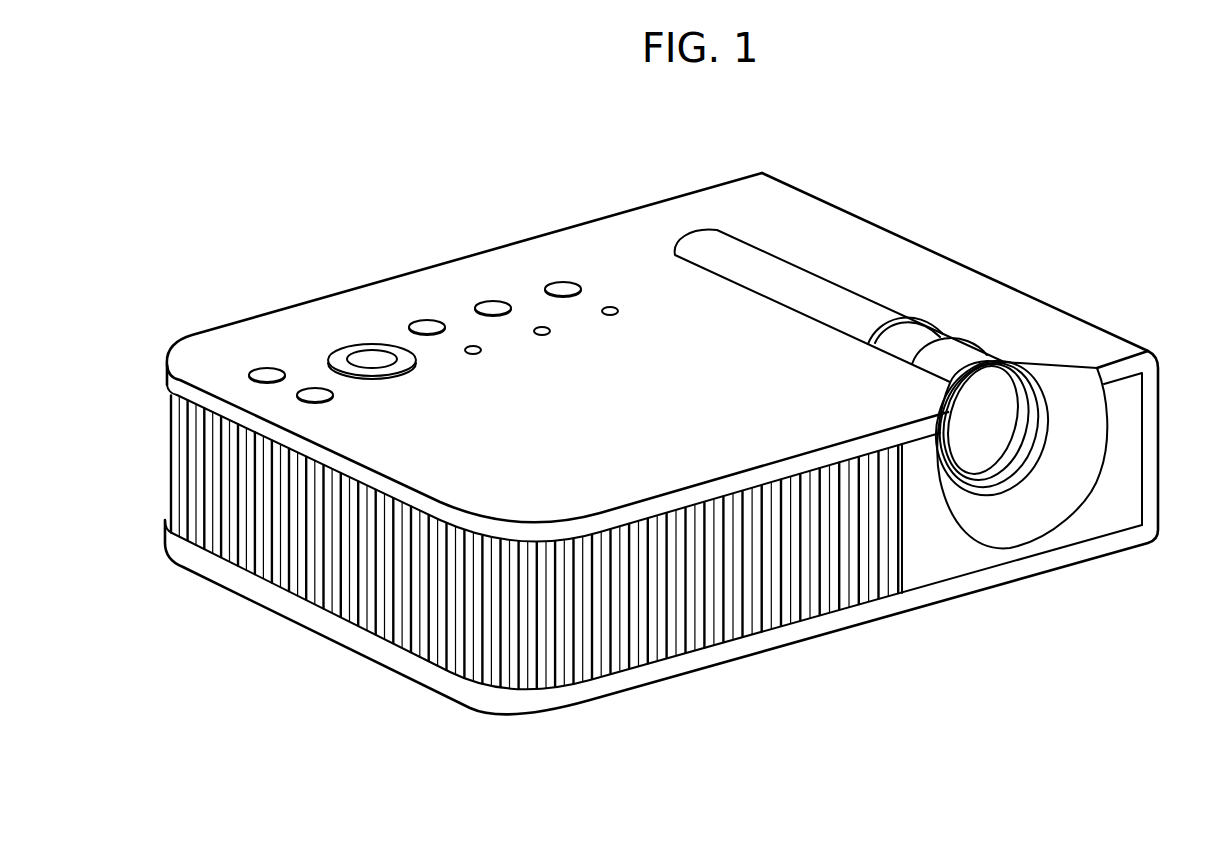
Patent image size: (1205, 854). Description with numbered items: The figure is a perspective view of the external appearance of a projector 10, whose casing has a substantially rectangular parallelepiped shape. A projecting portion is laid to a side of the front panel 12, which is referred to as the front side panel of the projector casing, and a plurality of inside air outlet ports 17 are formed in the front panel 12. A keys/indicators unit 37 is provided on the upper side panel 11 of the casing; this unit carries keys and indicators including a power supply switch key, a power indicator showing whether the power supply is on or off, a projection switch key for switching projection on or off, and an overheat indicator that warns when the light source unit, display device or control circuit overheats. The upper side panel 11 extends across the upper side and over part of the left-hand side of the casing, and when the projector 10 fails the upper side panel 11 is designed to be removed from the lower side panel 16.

The projector 10 is at (386, 229).
The upper side panel 11 is at (370, 302).
The keys/indicators unit 37 is at (363, 353).
The front panel 12 is at (938, 553).
The lower side panel 16 is at (331, 637).
The inside air outlet ports 17 is at (688, 637).